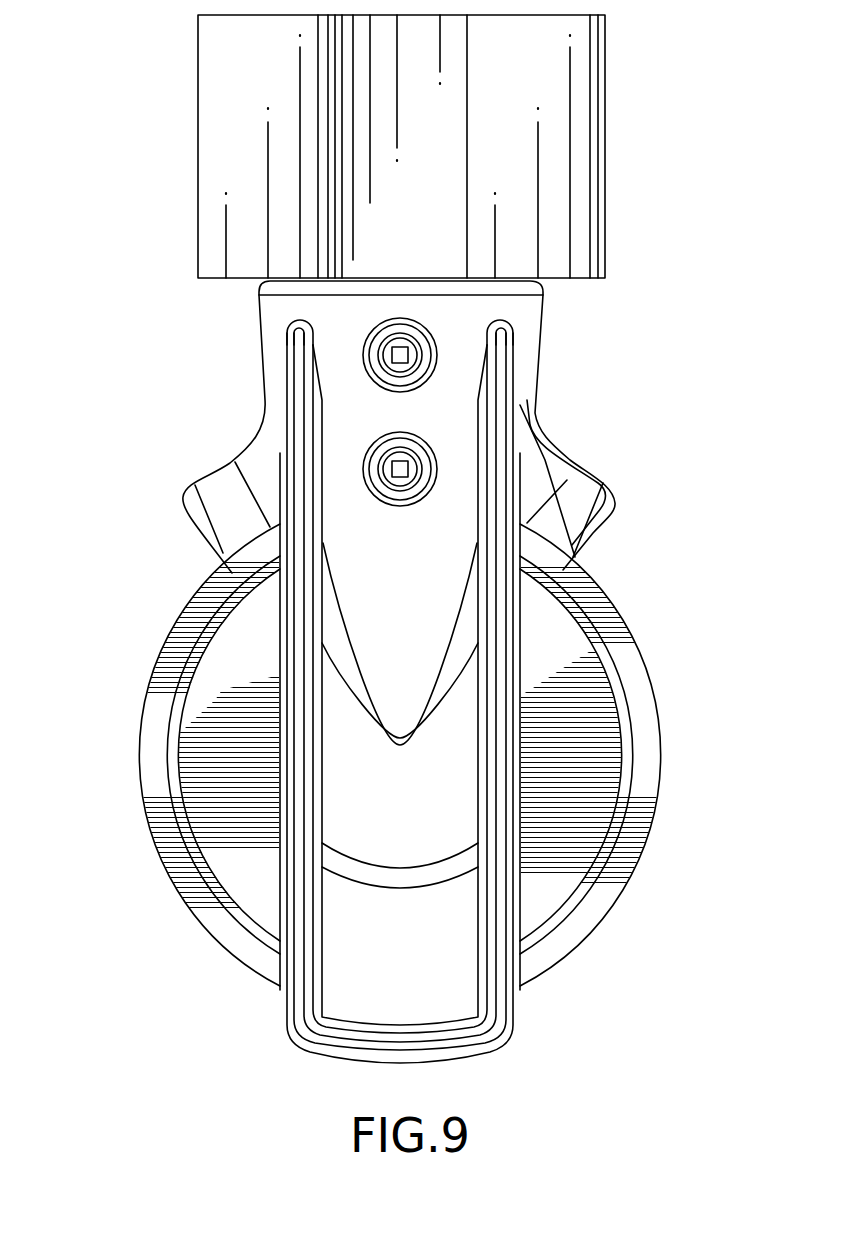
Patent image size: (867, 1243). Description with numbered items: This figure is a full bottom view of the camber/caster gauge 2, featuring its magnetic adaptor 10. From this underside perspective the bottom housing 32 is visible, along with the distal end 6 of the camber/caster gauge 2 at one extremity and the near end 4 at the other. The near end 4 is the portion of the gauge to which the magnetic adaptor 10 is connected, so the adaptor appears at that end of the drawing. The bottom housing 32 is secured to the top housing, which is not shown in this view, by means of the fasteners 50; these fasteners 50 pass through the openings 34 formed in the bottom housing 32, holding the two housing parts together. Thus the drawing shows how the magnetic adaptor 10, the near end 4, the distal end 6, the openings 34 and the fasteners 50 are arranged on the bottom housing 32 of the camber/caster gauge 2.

The camber/caster gauge 2 is at (150, 942).
The near end 4 is at (258, 310).
The distal end 6 is at (508, 1030).
The magnetic adaptor 10 is at (605, 133).
The bottom housing 32 is at (560, 755).
The openings 34 is at (363, 352).
The fasteners 50 is at (413, 355).